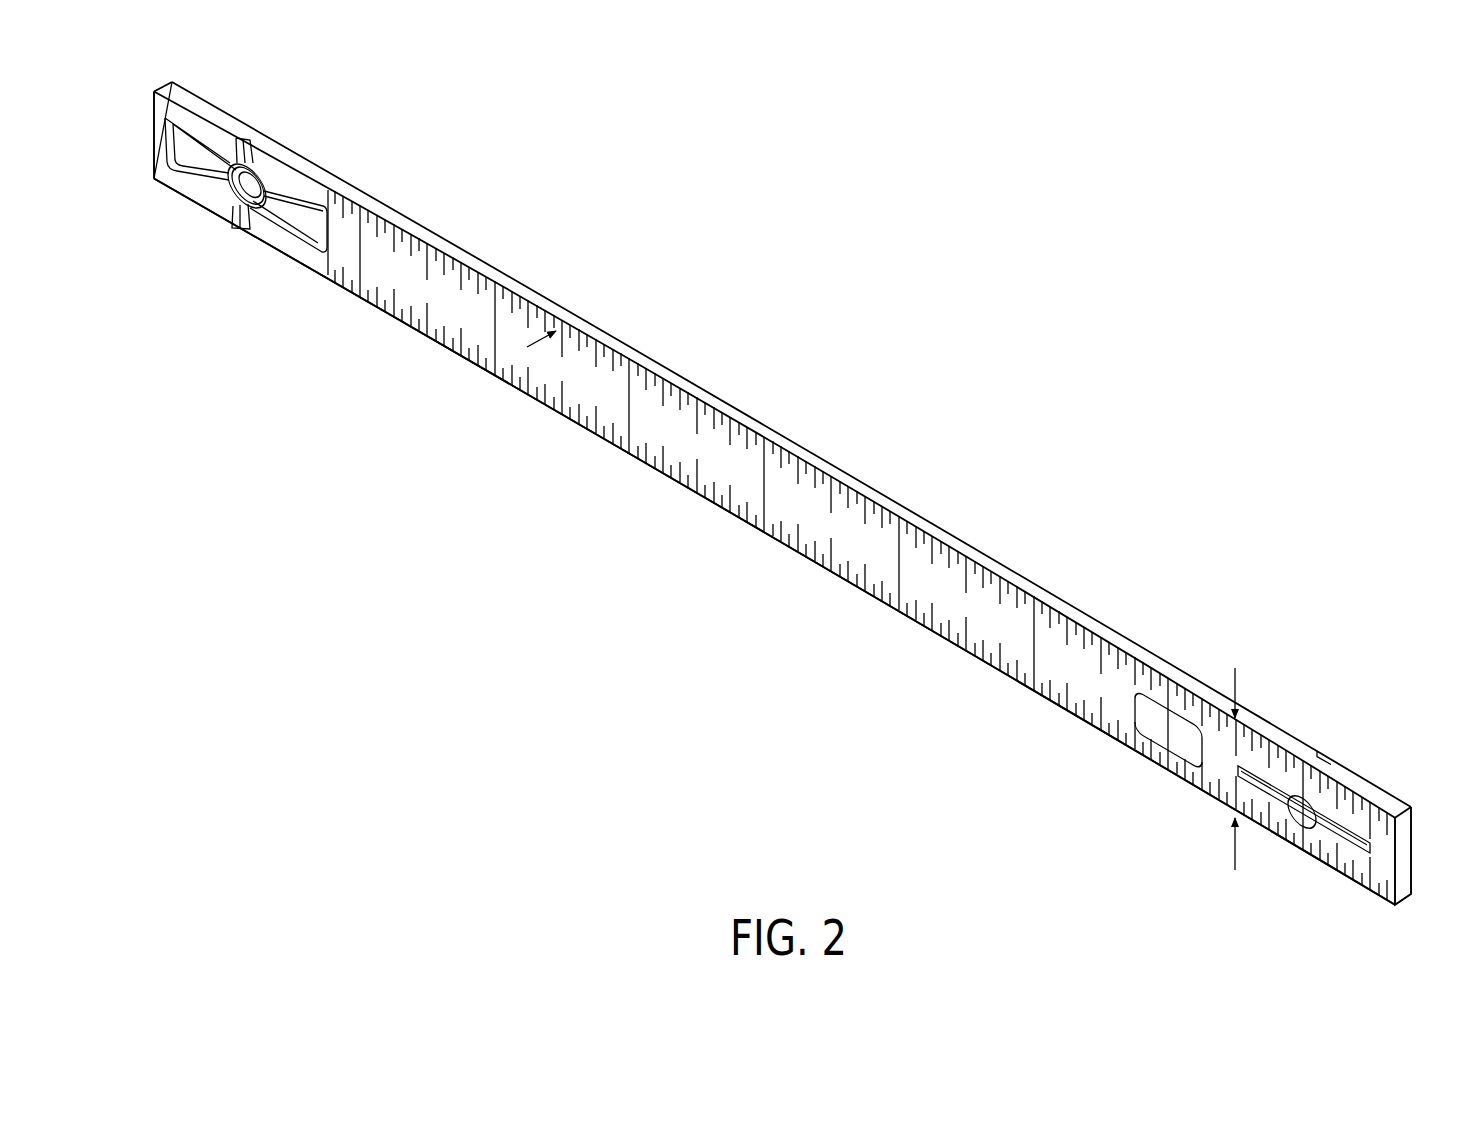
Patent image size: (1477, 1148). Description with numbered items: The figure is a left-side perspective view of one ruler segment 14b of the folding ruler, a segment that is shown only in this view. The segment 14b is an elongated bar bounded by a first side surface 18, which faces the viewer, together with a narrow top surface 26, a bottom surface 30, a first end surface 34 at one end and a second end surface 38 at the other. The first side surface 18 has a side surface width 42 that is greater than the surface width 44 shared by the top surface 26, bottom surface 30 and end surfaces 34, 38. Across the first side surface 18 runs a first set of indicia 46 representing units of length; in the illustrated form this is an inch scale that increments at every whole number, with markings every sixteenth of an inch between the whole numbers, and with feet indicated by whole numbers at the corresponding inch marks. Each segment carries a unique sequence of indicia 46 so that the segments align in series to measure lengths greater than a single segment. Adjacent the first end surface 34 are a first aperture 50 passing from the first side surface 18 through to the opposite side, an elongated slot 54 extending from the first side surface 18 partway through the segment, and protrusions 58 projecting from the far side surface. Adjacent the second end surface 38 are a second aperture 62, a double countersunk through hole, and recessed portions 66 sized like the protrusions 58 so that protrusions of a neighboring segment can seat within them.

The ruler segment 14b is at (1110, 398).
The first side surface 18 is at (683, 448).
The top surface 26 is at (862, 498).
The bottom surface 30 is at (993, 672).
The first end surface 34 is at (1409, 843).
The second end surface 38 is at (155, 118).
The side surface width 42 is at (1238, 682).
The surface width 44 is at (592, 313).
The first set of indicia 46 is at (851, 620).
The first aperture 50 is at (1305, 828).
The slot 54 is at (1352, 832).
The protrusions 58 is at (1320, 749).
The second aperture 62 is at (230, 204).
The recessed portions 66 is at (192, 138).